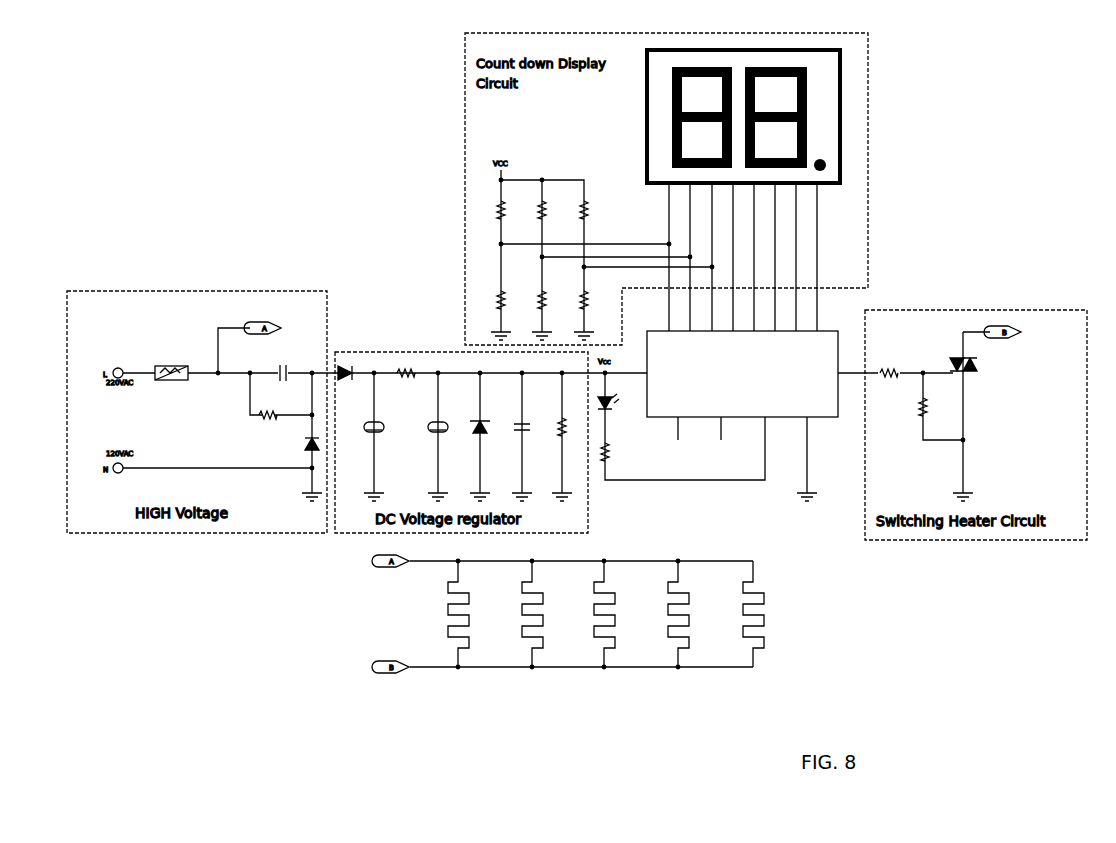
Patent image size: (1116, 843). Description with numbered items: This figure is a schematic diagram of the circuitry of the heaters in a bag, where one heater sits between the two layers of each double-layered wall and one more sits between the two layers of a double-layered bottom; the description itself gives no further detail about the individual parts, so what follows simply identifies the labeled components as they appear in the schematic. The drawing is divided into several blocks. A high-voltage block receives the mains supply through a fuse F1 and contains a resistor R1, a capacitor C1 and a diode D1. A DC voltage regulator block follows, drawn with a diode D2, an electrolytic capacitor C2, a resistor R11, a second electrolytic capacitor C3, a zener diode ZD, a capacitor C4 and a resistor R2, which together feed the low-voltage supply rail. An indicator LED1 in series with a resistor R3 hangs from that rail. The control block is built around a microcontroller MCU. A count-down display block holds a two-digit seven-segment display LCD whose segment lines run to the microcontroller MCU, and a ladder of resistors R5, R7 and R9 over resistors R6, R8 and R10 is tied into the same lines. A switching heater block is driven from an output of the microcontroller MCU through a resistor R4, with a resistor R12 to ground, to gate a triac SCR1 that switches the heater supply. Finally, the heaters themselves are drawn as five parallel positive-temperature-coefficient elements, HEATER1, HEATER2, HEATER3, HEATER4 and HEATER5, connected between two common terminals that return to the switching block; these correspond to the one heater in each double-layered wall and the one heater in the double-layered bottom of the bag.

The fuse F1 is at (171, 373).
The resistor R1 is at (269, 415).
The capacitor C1 is at (283, 374).
The diode D1 is at (322, 448).
The diode D2 is at (343, 374).
The electrolytic capacitor C2 is at (386, 432).
The resistor R11 is at (406, 374).
The electrolytic capacitor C3 is at (450, 432).
The zener diode ZD is at (487, 427).
The capacitor C4 is at (529, 432).
The resistor R2 is at (571, 428).
The LED LED1 is at (615, 402).
The resistor R3 is at (611, 453).
The microcontroller MCU is at (753, 342).
The count down display LCD is at (743, 118).
The resistor R5 is at (511, 210).
The resistor R6 is at (511, 300).
The resistor R7 is at (552, 210).
The resistor R8 is at (552, 300).
The resistor R9 is at (594, 210).
The resistor R10 is at (594, 300).
The resistor R4 is at (889, 374).
The resistor R12 is at (931, 407).
The triac SCR1 is at (987, 367).
The PTC heater HEATER1 is at (476, 614).
The PTC heater HEATER2 is at (550, 614).
The PTC heater HEATER3 is at (622, 614).
The PTC heater HEATER4 is at (696, 614).
The PTC heater HEATER5 is at (771, 614).